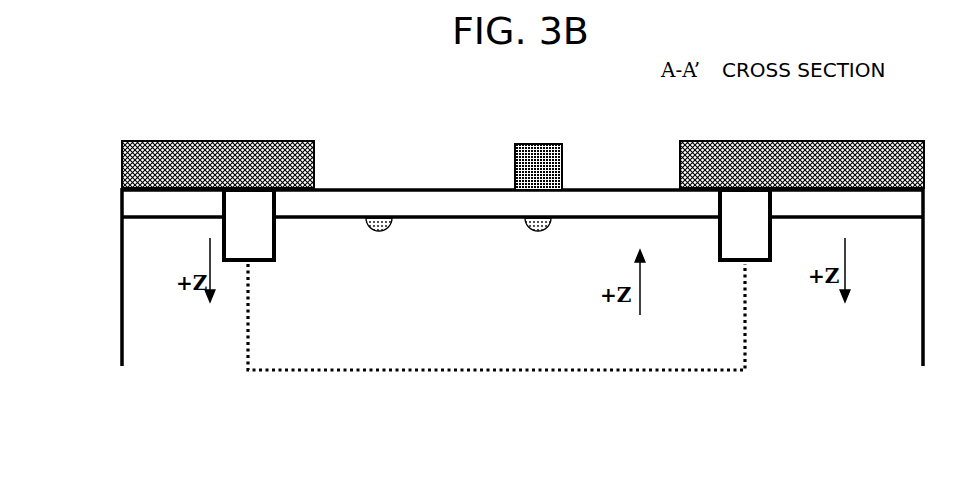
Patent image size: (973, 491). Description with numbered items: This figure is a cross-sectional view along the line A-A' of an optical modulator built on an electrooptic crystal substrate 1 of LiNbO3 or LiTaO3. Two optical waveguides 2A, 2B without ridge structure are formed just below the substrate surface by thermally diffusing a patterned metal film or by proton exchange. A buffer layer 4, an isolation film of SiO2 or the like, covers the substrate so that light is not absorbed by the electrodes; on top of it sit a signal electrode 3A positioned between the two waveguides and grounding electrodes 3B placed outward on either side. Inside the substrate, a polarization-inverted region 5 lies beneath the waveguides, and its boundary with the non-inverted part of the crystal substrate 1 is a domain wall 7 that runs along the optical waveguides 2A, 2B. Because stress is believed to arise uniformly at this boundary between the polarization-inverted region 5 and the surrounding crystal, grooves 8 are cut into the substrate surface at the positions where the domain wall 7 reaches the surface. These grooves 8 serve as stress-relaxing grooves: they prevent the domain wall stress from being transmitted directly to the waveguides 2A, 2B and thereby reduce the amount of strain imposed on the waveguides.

The crystal substrate 1 is at (188, 357).
The optical waveguide 2A is at (538, 240).
The optical waveguide 2B is at (382, 234).
The signal electrode 3A is at (533, 144).
The grounding electrode 3B is at (523, 152).
The buffer layer 4 is at (570, 200).
The polarization-inverted region 5 is at (478, 260).
The domain wall 7 is at (250, 320).
The grooves 8 is at (248, 212).